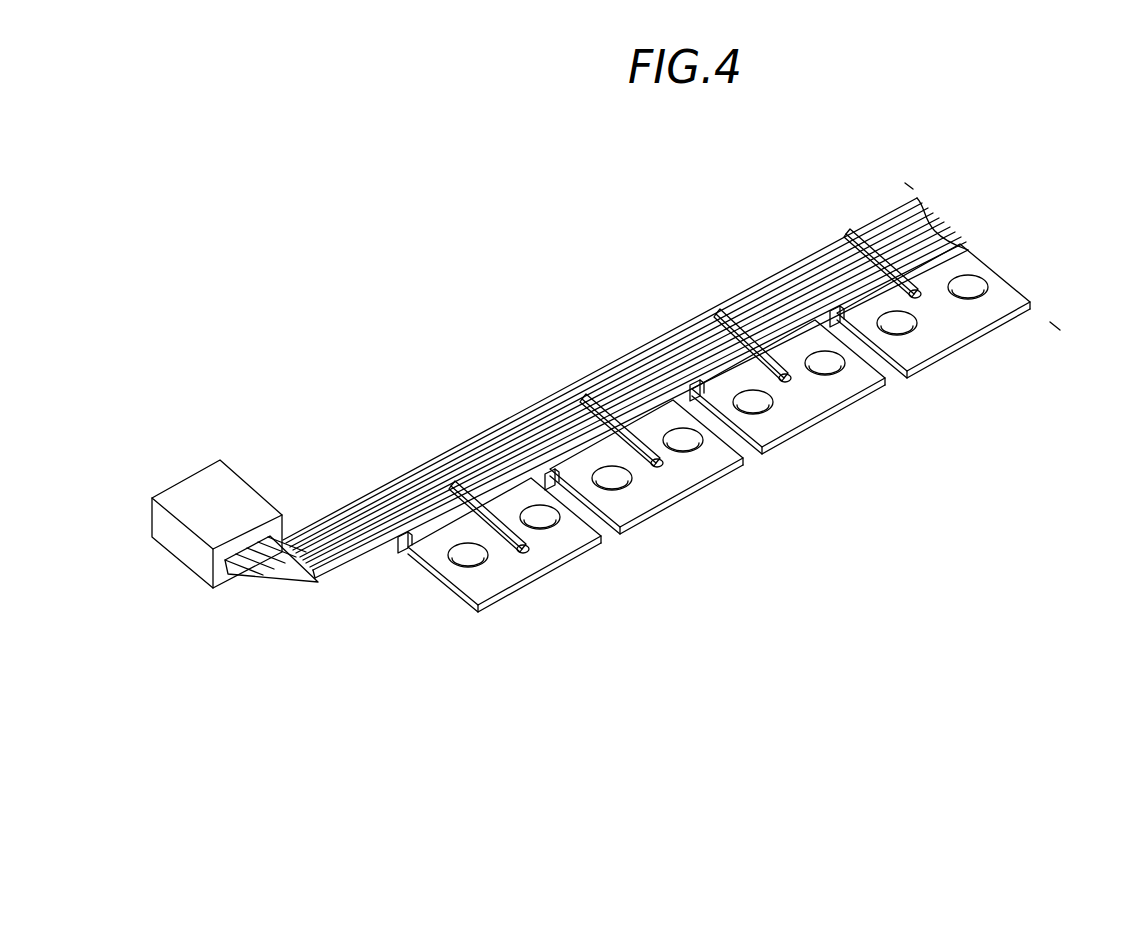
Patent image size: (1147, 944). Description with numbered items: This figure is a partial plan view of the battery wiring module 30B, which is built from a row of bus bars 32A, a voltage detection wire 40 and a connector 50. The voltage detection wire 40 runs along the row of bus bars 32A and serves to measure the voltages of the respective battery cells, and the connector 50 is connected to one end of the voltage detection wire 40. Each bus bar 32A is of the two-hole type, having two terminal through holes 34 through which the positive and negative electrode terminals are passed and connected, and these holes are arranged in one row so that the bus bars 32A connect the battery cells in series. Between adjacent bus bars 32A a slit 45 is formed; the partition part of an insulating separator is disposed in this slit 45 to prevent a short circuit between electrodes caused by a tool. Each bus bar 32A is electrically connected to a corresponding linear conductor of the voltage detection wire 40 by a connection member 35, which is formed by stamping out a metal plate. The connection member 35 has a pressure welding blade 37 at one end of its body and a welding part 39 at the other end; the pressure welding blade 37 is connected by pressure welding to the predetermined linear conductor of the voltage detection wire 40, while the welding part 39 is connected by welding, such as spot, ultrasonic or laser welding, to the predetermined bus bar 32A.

The battery wiring module 30B is at (632, 304).
The bus bar 32A is at (517, 595).
The terminal through hole 34 is at (464, 561).
The connection member 35 is at (480, 497).
The pressure welding blade 37 is at (453, 487).
The welding part 39 is at (526, 553).
The voltage detection wire 40 is at (397, 478).
The slit 45 is at (571, 493).
The connector 50 is at (208, 483).